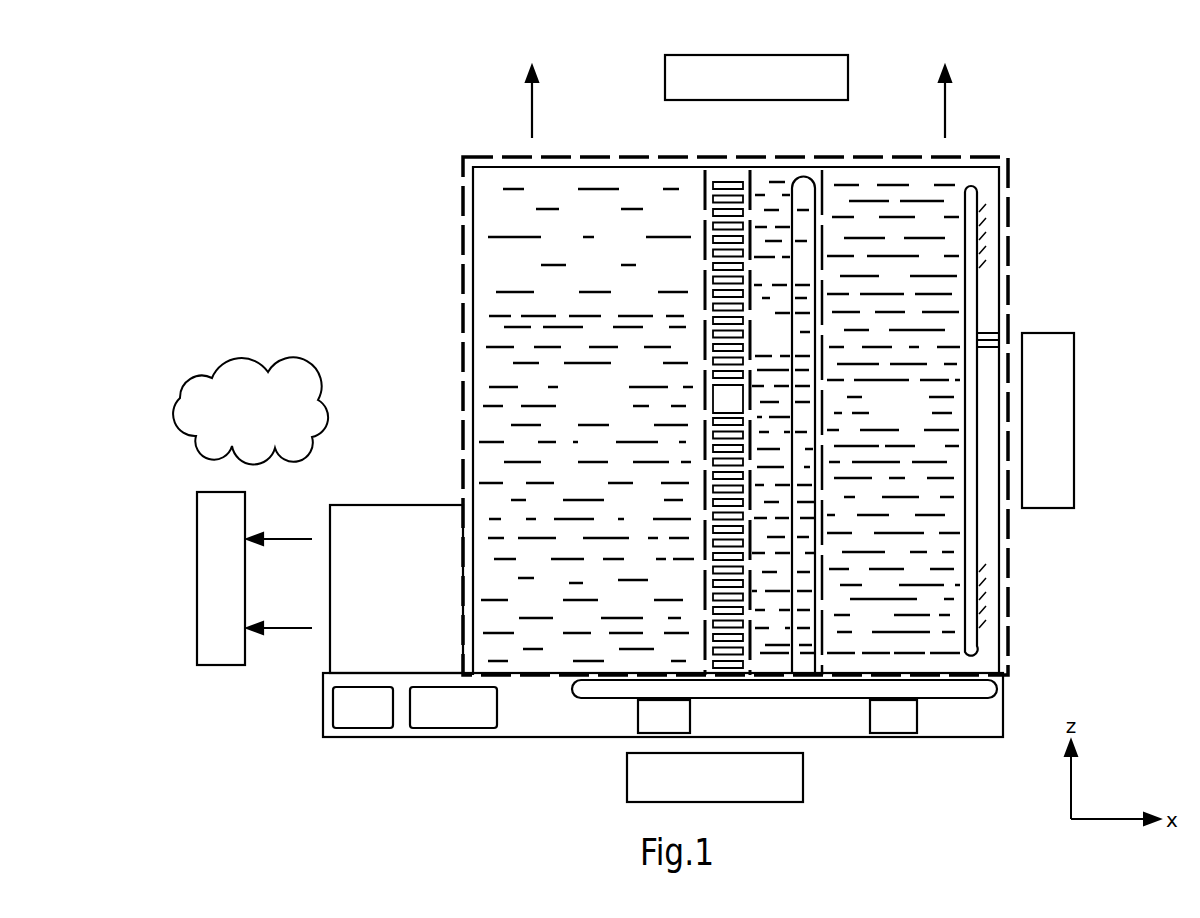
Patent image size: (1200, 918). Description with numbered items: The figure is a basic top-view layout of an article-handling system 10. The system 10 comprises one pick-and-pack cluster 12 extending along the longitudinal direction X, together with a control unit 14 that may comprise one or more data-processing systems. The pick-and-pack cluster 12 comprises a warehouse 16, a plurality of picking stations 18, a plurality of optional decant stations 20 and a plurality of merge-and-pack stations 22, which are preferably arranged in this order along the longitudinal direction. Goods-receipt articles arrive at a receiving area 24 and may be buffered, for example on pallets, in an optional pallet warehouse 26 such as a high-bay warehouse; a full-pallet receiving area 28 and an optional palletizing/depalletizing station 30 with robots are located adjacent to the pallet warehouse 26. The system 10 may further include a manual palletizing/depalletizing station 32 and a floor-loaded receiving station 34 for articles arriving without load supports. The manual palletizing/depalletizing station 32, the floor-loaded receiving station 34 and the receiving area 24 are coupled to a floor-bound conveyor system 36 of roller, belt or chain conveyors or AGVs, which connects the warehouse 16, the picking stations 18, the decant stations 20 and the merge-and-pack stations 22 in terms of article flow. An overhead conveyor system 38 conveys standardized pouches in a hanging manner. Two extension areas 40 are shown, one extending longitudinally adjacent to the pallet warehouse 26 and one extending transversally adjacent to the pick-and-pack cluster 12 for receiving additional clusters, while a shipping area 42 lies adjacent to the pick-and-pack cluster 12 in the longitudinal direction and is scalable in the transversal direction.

The article-handling system 10 is at (281, 141).
The pick-and-pack cluster 12 is at (446, 323).
The control unit 14 is at (244, 418).
The warehouse 16 is at (609, 405).
The picking station 18 is at (727, 422).
The decant station 20 is at (756, 343).
The merge-and-pack station 22 is at (885, 421).
The receiving area 24 is at (803, 774).
The pallet warehouse 26 is at (382, 605).
The full-pallet receiving area 28 is at (349, 723).
The palletizing/depalletizing station 30 is at (439, 723).
The manual palletizing/depalletizing station 32 is at (664, 716).
The floor-loaded receiving station 34 is at (893, 716).
The floor-bound conveyor system 36 is at (803, 170).
The overhead conveyor system 38 is at (764, 194).
The extension area 40 is at (665, 80).
The shipping area 42 is at (1042, 333).